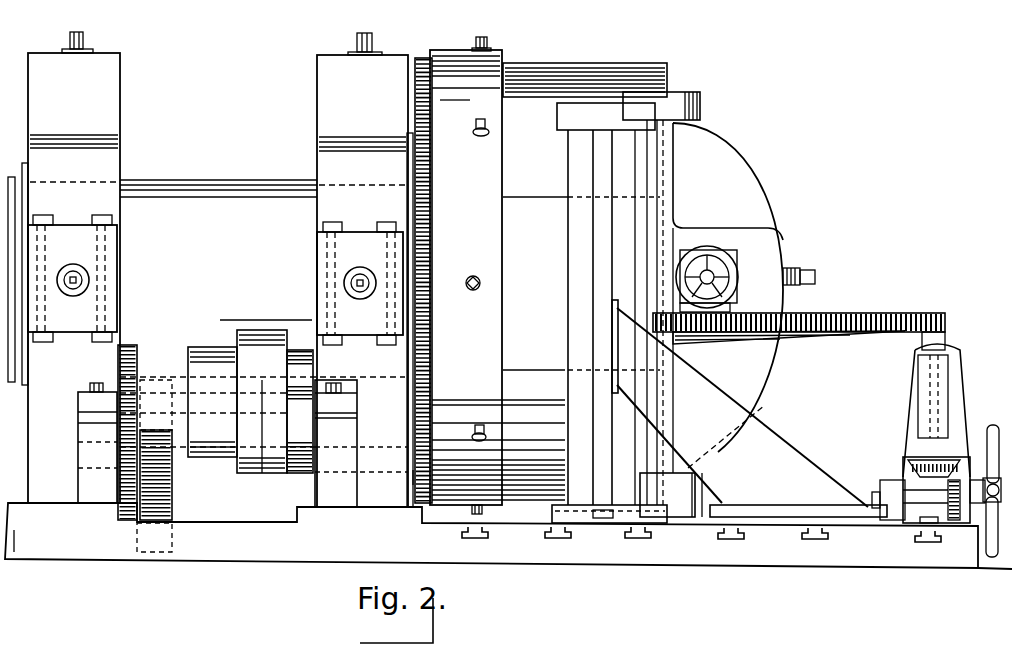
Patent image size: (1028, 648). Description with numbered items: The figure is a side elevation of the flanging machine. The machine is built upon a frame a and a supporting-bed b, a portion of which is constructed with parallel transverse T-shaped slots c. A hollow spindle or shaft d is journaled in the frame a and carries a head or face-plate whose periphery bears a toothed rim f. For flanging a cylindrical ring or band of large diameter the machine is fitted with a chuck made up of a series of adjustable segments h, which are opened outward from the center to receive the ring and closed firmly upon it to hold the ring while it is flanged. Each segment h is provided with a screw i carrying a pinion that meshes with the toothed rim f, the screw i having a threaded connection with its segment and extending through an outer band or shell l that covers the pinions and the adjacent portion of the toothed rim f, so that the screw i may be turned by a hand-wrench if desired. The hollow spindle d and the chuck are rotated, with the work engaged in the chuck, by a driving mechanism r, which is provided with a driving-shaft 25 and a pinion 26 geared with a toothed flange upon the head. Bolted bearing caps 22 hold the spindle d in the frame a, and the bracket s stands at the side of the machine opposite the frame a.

The bearing cap bolts 22 is at (84, 50).
The driving-shaft 25 is at (303, 474).
The pinion 26 is at (412, 480).
The frame a is at (210, 280).
The supporting-bed b is at (508, 536).
The T-shaped slots c is at (640, 534).
The hollow spindle or shaft d is at (262, 313).
The driving mechanism r is at (138, 357).
The toothed rim f is at (431, 243).
The segments h is at (566, 447).
The screw i is at (490, 50).
The outer band or shell l is at (497, 277).
The frame bracket s is at (827, 340).